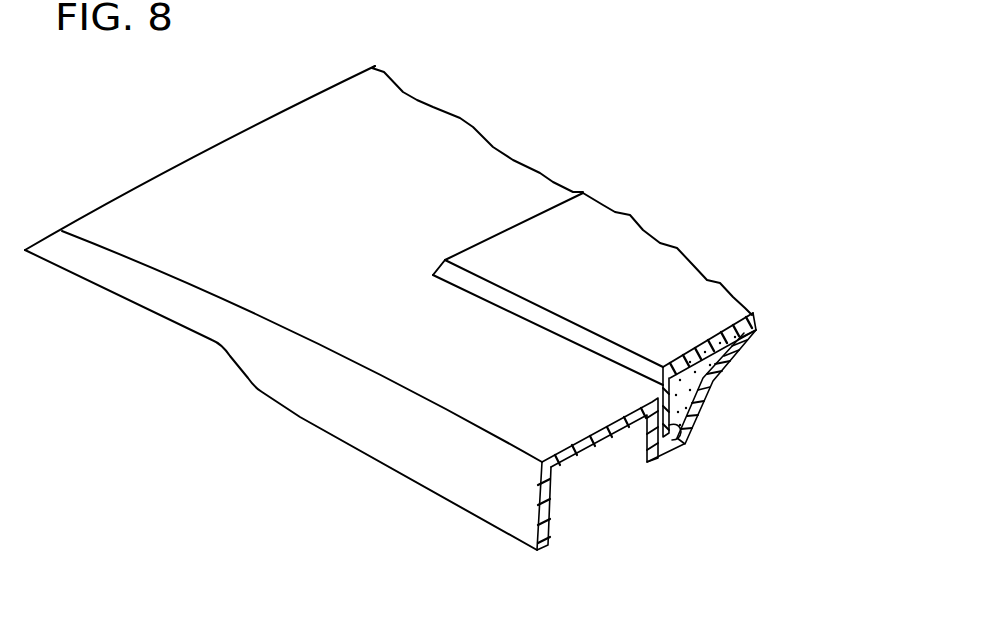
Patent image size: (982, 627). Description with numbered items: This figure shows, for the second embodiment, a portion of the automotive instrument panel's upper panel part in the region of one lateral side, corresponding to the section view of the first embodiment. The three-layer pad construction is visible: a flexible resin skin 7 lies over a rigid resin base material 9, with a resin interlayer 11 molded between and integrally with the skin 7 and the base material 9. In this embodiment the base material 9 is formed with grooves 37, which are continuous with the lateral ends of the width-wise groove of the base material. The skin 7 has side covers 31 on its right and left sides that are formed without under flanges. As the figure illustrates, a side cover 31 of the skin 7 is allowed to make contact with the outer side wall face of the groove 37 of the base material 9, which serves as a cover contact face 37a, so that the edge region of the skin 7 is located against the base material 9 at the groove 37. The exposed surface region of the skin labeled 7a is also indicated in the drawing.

The base material 9 is at (409, 158).
The skin 7 is at (618, 213).
The end portion of upper panel 7a is at (633, 278).
The interlayer 11 is at (720, 350).
The side cover 31 is at (525, 313).
The cover contact face 37a is at (564, 331).
The groove 37 is at (684, 445).